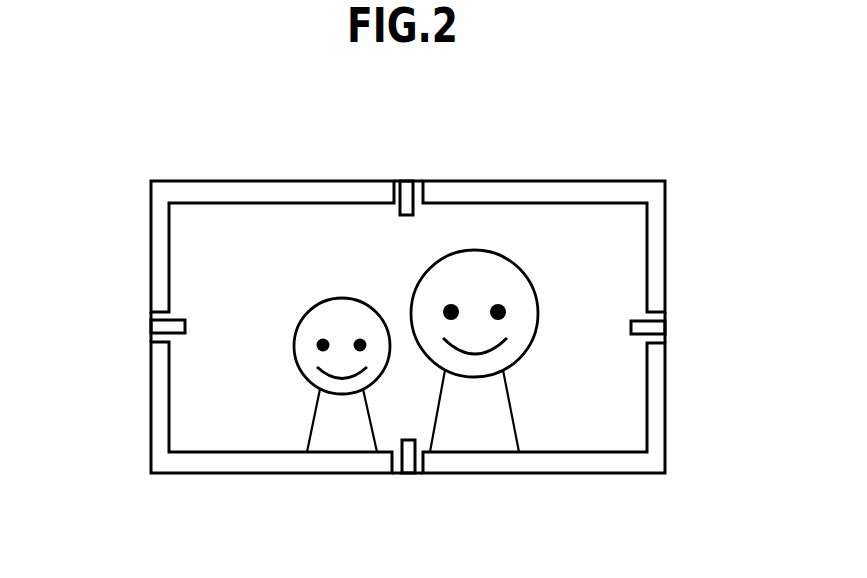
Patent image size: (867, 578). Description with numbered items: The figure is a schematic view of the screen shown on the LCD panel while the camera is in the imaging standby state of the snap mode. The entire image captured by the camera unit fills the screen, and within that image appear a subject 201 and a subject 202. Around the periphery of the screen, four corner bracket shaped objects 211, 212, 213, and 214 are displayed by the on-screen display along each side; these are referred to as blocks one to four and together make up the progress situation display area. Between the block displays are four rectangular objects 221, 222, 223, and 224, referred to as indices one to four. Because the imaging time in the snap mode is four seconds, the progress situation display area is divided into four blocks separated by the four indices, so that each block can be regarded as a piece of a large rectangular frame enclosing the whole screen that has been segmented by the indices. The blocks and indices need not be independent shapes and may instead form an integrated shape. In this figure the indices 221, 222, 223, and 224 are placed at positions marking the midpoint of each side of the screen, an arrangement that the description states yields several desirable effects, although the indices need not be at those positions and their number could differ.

The subject 201 is at (474, 249).
The subject 202 is at (342, 297).
The corner bracket shaped object (block 1) 211 is at (604, 191).
The corner bracket shaped object (block 2) 212 is at (581, 473).
The corner bracket shaped object (block 3) 213 is at (226, 473).
The corner bracket shaped object (block 4) 214 is at (221, 192).
The rectangular object (index 1) 221 is at (698, 329).
The rectangular object (index 2) 222 is at (405, 473).
The rectangular object (index 3) 223 is at (156, 329).
The rectangular object (index 4) 224 is at (406, 191).